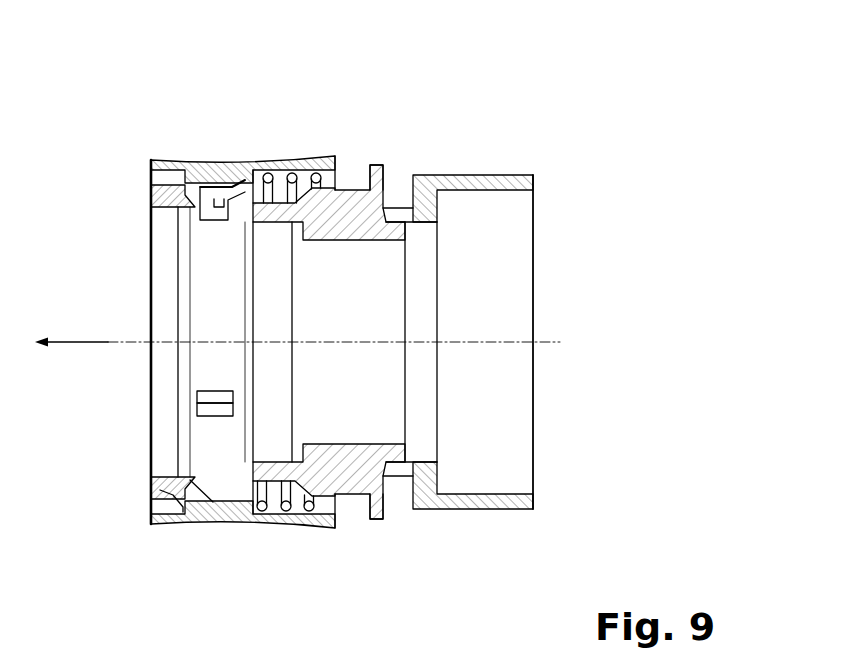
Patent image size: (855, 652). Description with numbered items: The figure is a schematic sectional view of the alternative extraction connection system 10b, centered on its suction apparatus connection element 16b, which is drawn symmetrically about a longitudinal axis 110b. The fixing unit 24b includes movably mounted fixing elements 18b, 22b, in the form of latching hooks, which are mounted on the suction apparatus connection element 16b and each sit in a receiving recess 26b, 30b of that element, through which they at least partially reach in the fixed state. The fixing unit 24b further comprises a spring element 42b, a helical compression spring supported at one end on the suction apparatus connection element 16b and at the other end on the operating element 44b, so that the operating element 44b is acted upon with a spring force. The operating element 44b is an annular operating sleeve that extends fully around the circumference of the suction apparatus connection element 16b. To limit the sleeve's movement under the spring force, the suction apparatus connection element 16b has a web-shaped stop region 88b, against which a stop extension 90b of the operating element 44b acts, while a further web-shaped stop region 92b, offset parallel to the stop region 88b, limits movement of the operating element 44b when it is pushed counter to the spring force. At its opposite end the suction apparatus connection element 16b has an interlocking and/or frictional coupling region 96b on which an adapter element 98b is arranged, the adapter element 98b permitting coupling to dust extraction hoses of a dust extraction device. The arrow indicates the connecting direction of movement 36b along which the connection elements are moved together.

The extraction connection system 10b is at (532, 89).
The suction apparatus connection element 16b is at (165, 263).
The fixing element 18b is at (228, 204).
The fixing element 22b is at (197, 392).
The fixing unit 24b is at (393, 93).
The receiving recess 26b is at (195, 203).
The receiving recess 30b is at (200, 411).
The connecting direction of movement 36b is at (81, 341).
The spring element 42b is at (296, 505).
The operating element 44b is at (232, 512).
The stop region 88b is at (140, 510).
The stop extension 90b is at (170, 510).
The further stop region 92b is at (378, 536).
The coupling region 96b is at (422, 141).
The adapter element 98b is at (503, 410).
The longitudinal axis 110b is at (560, 342).